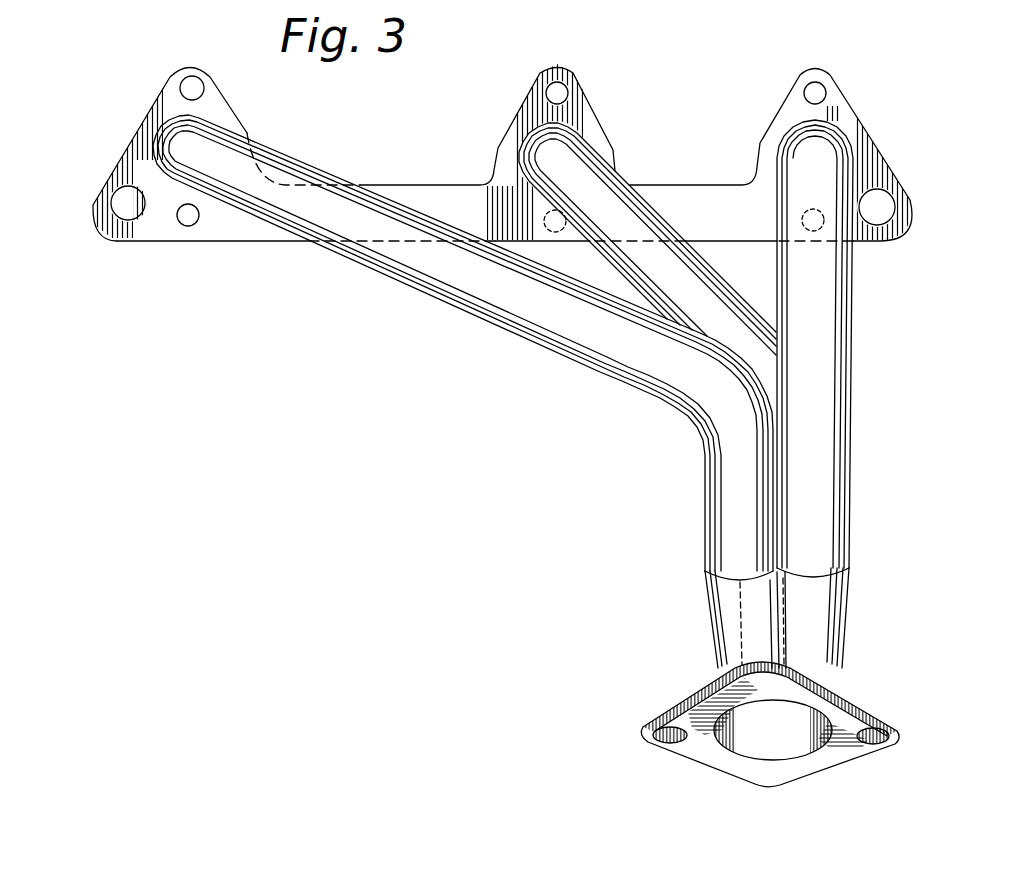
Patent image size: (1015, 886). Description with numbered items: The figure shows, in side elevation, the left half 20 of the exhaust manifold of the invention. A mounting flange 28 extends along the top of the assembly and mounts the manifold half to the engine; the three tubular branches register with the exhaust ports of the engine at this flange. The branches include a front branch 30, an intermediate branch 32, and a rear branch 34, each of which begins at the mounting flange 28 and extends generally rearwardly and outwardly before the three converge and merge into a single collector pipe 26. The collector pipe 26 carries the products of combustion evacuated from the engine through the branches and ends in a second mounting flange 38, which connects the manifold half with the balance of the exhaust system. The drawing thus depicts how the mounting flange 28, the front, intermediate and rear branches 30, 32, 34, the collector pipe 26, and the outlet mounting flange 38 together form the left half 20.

The left half 20 is at (872, 378).
The collector pipe 26 is at (835, 607).
The mounting flange 28 is at (170, 228).
The front branch 30 is at (308, 197).
The intermediate branch 32 is at (640, 197).
The rear branch 34 is at (833, 283).
The mounting flange 38 is at (837, 708).